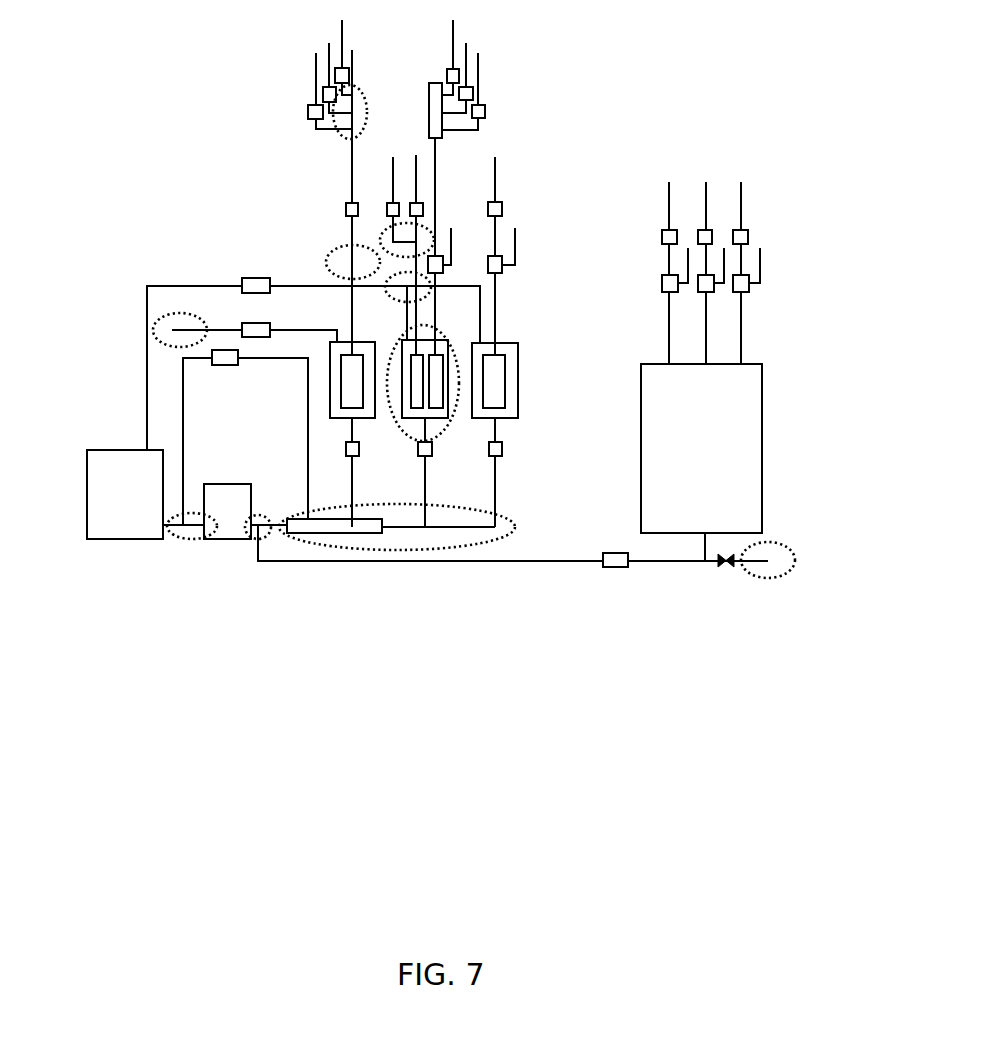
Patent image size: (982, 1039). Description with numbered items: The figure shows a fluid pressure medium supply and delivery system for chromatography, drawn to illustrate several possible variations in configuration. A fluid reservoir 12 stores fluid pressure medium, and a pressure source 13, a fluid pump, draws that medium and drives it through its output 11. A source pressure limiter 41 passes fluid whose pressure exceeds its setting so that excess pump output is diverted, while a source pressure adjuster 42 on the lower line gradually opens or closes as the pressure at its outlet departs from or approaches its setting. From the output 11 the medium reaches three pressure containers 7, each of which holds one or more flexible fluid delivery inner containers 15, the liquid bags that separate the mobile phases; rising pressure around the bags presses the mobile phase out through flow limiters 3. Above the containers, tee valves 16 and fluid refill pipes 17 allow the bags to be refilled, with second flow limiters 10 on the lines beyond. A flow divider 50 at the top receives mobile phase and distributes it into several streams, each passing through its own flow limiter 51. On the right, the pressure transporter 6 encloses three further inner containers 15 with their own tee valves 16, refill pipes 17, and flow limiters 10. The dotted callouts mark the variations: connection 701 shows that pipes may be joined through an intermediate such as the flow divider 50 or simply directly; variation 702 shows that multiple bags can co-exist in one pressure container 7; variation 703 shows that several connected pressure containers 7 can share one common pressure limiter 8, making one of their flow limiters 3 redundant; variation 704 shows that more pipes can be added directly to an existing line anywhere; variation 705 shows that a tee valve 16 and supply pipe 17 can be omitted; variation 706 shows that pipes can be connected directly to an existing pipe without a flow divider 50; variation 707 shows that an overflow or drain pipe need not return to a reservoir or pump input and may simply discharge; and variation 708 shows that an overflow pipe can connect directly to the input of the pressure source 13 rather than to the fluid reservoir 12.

The flow limiter 3 is at (502, 449).
The pressure transporter 6 is at (763, 487).
The pressure container 7 is at (518, 400).
The pressure limiter 8 is at (255, 278).
The second flow limiter 10 is at (507, 208).
The output of the pressure source 11 is at (273, 525).
The fluid reservoir 12 is at (87, 503).
The pressure source 13 is at (227, 484).
The fluid delivery inner container 15 is at (507, 373).
The tee valve 16 is at (502, 270).
The fluid refill pipe 17 is at (515, 245).
The source pressure limiter 41 is at (225, 350).
The source pressure adjuster 42 is at (623, 553).
The flow divider 50 is at (428, 102).
The flow limiter 51 is at (485, 112).
The pipe connection variation 701 is at (515, 527).
The multiple bags variation 702 is at (440, 435).
The shared pressure limiter variation 703 is at (429, 296).
The added pipe variation 704 is at (253, 543).
The absent tee valve variation 705 is at (343, 243).
The direct pipe connection variation 706 is at (340, 140).
The overflow pipe discharge variation 707 is at (158, 320).
The overflow pipe to pump input variation 708 is at (182, 539).